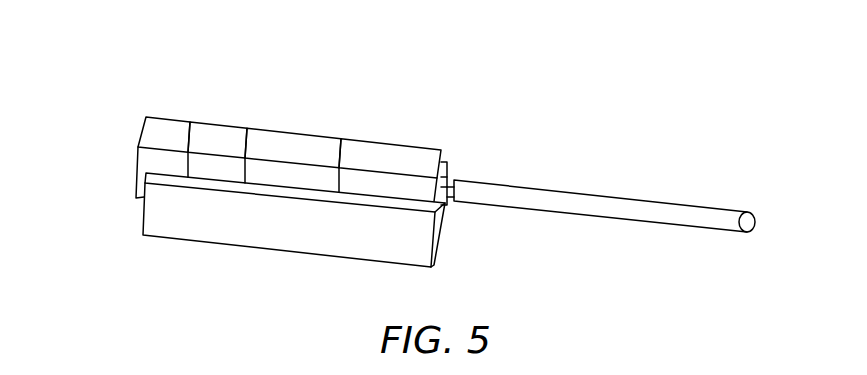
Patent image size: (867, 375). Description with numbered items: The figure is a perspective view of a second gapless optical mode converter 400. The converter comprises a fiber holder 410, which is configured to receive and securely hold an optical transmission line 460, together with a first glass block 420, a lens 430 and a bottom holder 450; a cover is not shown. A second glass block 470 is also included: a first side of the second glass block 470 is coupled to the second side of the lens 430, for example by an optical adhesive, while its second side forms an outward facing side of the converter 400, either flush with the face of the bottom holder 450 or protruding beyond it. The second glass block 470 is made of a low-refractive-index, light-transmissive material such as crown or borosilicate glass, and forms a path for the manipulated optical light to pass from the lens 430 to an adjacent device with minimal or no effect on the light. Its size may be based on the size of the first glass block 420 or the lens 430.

The second gapless optical mode converter 400 is at (90, 36).
The fiber holder 410 is at (398, 145).
The first glass block 420 is at (305, 135).
The lens 430 is at (214, 125).
The bottom holder 450 is at (439, 249).
The optical transmission line 460 is at (500, 184).
The second glass block 470 is at (150, 117).